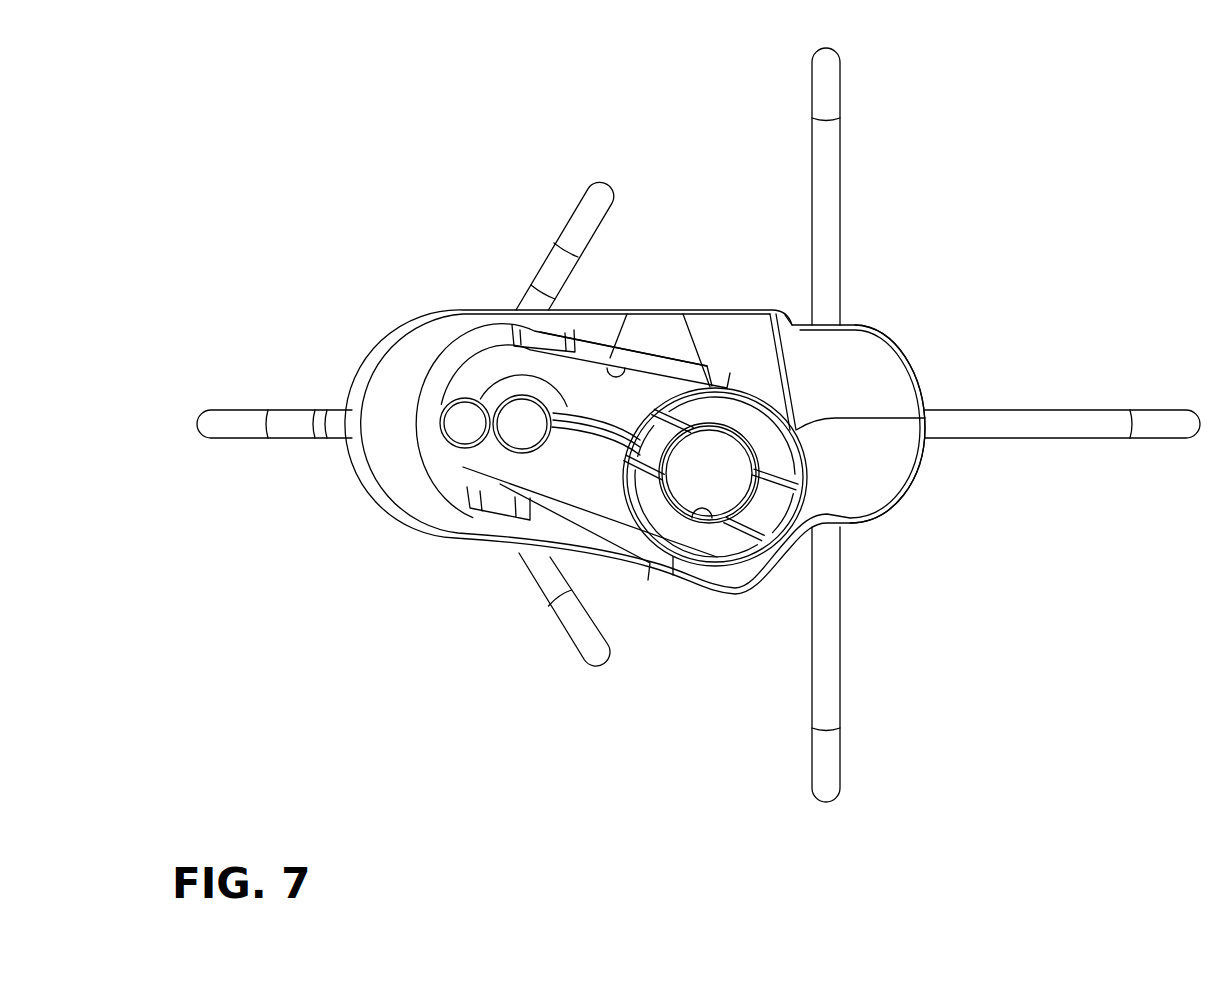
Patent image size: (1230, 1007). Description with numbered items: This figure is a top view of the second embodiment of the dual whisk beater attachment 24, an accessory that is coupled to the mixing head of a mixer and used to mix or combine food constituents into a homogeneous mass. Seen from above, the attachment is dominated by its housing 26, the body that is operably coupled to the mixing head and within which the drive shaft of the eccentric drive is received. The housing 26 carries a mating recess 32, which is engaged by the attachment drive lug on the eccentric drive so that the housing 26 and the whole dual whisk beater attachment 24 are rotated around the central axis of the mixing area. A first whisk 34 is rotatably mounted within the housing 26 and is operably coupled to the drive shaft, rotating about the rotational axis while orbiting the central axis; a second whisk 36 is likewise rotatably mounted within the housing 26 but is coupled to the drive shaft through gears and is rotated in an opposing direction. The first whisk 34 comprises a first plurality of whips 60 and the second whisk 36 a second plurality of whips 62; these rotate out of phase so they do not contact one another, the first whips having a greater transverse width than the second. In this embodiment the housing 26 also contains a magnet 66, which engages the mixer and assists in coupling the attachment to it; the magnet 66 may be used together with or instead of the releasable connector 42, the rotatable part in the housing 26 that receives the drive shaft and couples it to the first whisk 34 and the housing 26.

The dual whisk beater attachment 24 is at (684, 425).
The housing 26 is at (897, 349).
The mating recess 32 is at (615, 376).
The first whisk 34 is at (986, 421).
The second whisk 36 is at (550, 577).
The releasable connector 42 is at (698, 512).
The first plurality of whips 60 is at (822, 647).
The second plurality of whips 62 is at (232, 420).
The magnet 66 is at (719, 460).